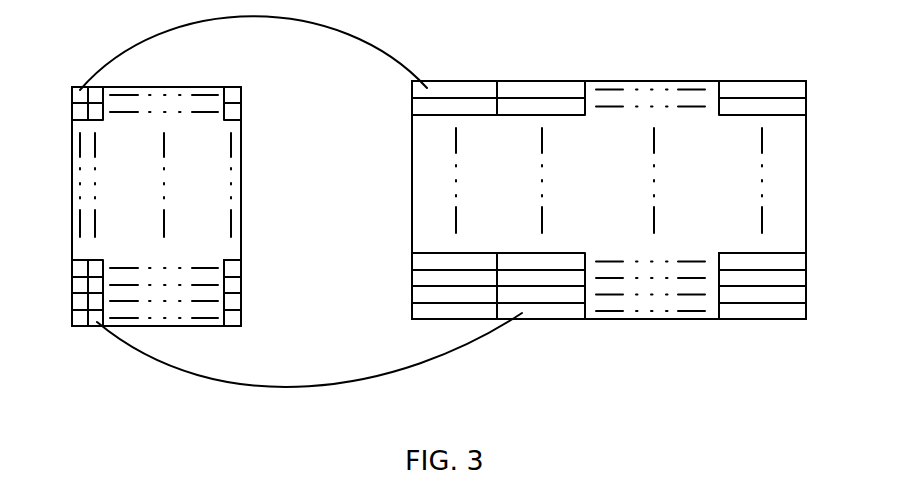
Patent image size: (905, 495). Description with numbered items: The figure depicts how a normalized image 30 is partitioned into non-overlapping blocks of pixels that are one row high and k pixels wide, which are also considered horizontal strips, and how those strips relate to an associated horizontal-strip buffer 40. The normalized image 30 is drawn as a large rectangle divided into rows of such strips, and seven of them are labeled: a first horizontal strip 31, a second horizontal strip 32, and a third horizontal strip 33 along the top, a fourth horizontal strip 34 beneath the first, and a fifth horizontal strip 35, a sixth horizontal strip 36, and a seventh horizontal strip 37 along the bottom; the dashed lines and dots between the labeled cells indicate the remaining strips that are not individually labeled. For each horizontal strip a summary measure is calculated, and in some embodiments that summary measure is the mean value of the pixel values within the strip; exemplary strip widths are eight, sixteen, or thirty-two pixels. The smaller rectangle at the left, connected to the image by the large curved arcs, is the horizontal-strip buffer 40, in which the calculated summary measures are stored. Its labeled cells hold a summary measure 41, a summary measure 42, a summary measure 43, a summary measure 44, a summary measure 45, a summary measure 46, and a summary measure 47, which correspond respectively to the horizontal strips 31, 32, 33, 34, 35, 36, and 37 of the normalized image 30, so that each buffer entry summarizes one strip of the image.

The normalized image 30 is at (806, 81).
The horizontal strip 31 is at (428, 83).
The horizontal strip 32 is at (522, 86).
The horizontal strip 33 is at (733, 86).
The horizontal strip 34 is at (416, 106).
The horizontal strip 35 is at (422, 314).
The horizontal strip 36 is at (568, 314).
The horizontal strip 37 is at (810, 262).
The horizontal-strip buffer 40 is at (241, 87).
The summary measure 41 is at (72, 93).
The summary measure 42 is at (91, 91).
The summary measure 43 is at (239, 96).
The summary measure 44 is at (75, 112).
The summary measure 45 is at (73, 316).
The summary measure 46 is at (98, 324).
The summary measure 47 is at (237, 266).